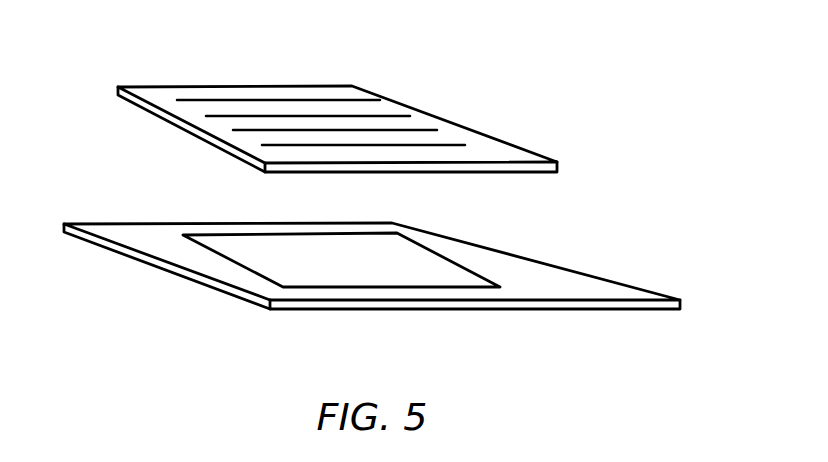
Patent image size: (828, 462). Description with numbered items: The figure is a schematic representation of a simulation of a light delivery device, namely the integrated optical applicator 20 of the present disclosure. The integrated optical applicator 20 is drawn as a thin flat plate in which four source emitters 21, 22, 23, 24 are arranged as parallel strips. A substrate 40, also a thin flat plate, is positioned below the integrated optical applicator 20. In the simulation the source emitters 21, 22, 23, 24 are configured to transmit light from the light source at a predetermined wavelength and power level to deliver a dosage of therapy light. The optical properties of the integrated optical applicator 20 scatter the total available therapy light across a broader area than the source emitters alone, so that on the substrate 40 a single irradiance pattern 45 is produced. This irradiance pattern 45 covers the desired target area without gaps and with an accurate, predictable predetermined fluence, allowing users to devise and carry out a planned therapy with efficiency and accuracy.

The integrated optical applicator 20 is at (512, 156).
The source emitter 21 is at (253, 100).
The source emitter 22 is at (223, 116).
The source emitter 23 is at (415, 129).
The source emitter 24 is at (445, 145).
The substrate 40 is at (618, 292).
The irradiance pattern 45 is at (218, 252).